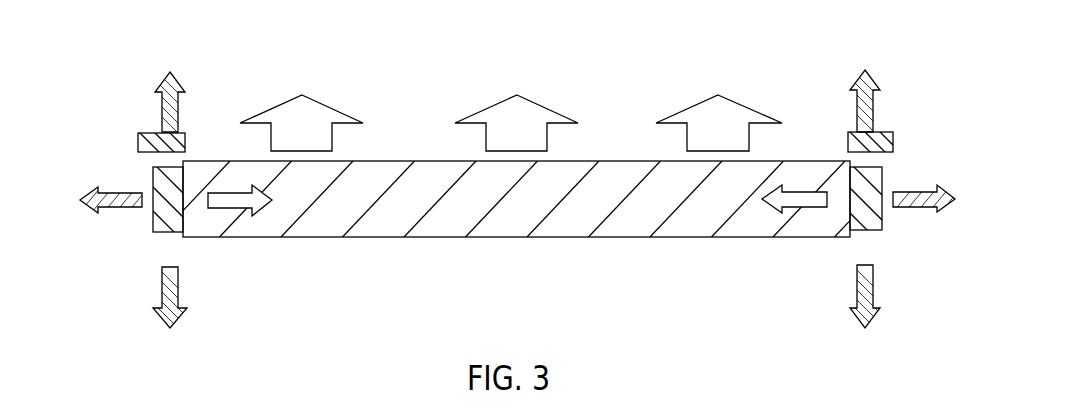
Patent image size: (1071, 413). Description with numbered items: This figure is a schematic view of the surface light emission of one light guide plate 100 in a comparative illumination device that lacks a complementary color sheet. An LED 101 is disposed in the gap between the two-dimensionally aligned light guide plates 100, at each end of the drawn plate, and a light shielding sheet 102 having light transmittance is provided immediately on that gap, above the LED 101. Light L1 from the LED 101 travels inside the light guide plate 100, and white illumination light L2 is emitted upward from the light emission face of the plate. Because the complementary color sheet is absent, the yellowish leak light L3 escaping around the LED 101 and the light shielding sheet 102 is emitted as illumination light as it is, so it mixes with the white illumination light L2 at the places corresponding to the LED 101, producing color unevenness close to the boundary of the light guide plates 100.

The light guide plate 100 is at (579, 213).
The LED 101 is at (882, 222).
The light shielding sheet 102 is at (140, 140).
The light traveling in light guide plate L1 is at (797, 205).
The white illumination light L2 is at (735, 117).
The leak light L3 is at (873, 108).